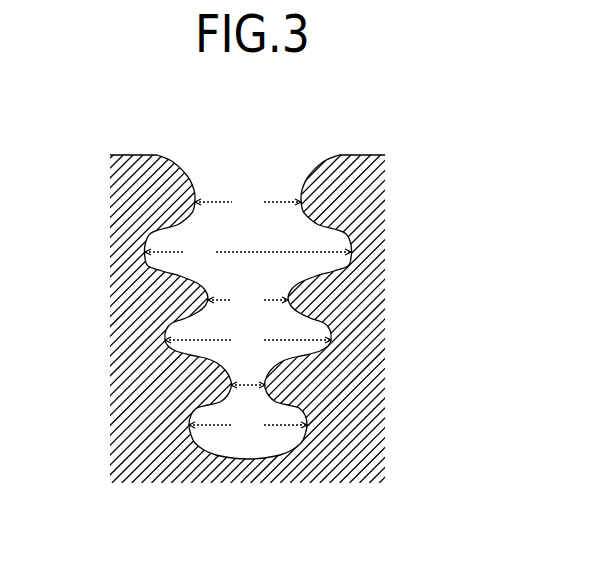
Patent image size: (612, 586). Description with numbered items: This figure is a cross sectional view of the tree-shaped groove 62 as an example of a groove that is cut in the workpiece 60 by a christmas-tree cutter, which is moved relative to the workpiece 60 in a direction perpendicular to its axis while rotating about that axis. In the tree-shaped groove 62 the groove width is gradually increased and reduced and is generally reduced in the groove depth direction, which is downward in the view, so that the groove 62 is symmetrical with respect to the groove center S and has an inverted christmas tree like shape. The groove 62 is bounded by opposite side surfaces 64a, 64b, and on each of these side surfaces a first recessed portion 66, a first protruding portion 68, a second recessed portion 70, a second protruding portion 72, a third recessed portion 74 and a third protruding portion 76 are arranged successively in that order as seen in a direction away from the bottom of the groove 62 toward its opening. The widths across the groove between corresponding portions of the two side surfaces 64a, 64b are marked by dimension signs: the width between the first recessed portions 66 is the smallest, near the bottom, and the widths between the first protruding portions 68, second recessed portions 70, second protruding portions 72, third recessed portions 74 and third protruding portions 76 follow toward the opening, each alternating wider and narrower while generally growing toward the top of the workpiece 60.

The workpiece 60 is at (359, 168).
The tree-shaped groove 62 is at (168, 138).
The side surface 64a is at (195, 170).
The side surface 64b is at (304, 167).
The first recessed portion 66 is at (200, 456).
The first protruding portion 68 is at (200, 400).
The second recessed portion 70 is at (166, 333).
The second protruding portion 72 is at (168, 298).
The third recessed portion 74 is at (146, 242).
The third protruding portion 76 is at (180, 212).
The groove center S is at (248, 442).